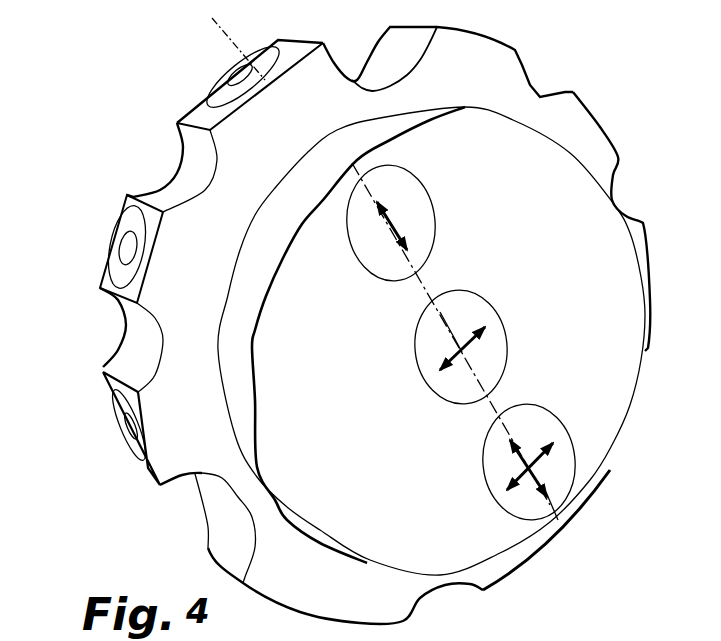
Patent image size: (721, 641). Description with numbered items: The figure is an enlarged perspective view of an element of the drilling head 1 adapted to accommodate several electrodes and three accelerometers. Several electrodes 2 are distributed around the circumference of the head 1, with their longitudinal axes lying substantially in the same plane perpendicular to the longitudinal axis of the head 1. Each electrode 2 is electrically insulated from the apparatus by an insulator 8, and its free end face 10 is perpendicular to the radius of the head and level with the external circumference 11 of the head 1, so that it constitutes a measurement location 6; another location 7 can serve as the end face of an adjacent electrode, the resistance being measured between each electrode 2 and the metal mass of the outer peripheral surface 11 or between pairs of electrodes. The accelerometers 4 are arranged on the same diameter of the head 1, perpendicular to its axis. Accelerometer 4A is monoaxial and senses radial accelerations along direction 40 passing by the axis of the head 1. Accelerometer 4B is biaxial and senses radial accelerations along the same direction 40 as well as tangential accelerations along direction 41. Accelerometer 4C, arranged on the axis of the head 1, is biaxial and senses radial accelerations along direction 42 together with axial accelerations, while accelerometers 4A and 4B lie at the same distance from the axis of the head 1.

The head 1 is at (375, 325).
The electrode 2 is at (223, 72).
The accelerometer 4 is at (373, 287).
The accelerometer 4A is at (373, 253).
The accelerometer 4B is at (555, 477).
The accelerometer 4C is at (493, 338).
The measurement location 6 is at (222, 58).
The location 7 is at (273, 42).
The insulator 8 is at (215, 95).
The free end face 10 is at (130, 428).
The external circumference 11 is at (97, 277).
The direction 40 is at (395, 223).
The direction 41 is at (534, 445).
The direction 42 is at (460, 350).